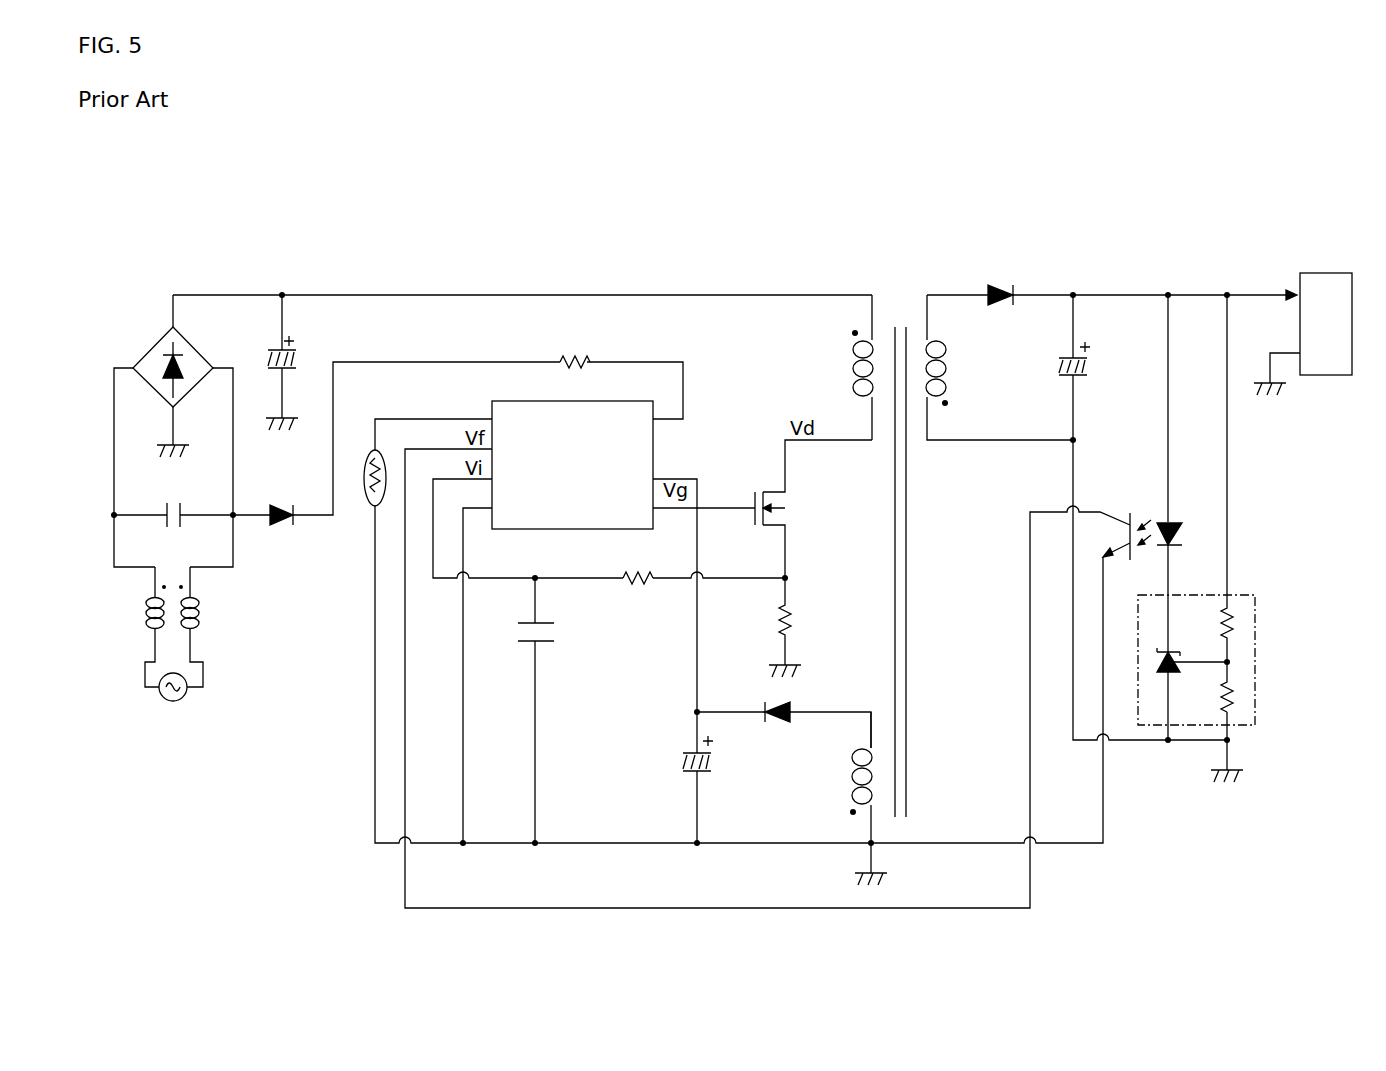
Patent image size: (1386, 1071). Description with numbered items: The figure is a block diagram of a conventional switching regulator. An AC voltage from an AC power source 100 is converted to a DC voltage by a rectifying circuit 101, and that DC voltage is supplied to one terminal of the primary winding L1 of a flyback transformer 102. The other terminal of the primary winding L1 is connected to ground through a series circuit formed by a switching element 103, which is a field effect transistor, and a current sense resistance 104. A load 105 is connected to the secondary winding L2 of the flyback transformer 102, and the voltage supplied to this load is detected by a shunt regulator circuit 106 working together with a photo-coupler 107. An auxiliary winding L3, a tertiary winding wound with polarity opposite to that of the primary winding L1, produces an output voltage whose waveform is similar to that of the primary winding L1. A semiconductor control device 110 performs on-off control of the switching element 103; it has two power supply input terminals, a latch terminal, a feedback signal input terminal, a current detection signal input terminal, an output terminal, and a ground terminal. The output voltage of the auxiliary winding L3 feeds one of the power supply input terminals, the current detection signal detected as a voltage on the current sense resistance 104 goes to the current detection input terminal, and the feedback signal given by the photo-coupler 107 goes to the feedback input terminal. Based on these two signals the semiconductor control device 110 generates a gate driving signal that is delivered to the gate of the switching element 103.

The AC power source 100 is at (183, 700).
The rectifying circuit 101 is at (197, 338).
The flyback transformer 102 is at (935, 552).
The switching element 103 is at (773, 490).
The current sense resistance 104 is at (793, 620).
The load 105 is at (1325, 273).
The shunt regulator circuit 106 is at (1240, 595).
The photo-coupler 107 is at (1140, 508).
The semiconductor control device 110 is at (575, 398).
The primary winding L1 is at (858, 362).
The secondary winding L2 is at (946, 364).
The auxiliary winding L3 is at (884, 743).